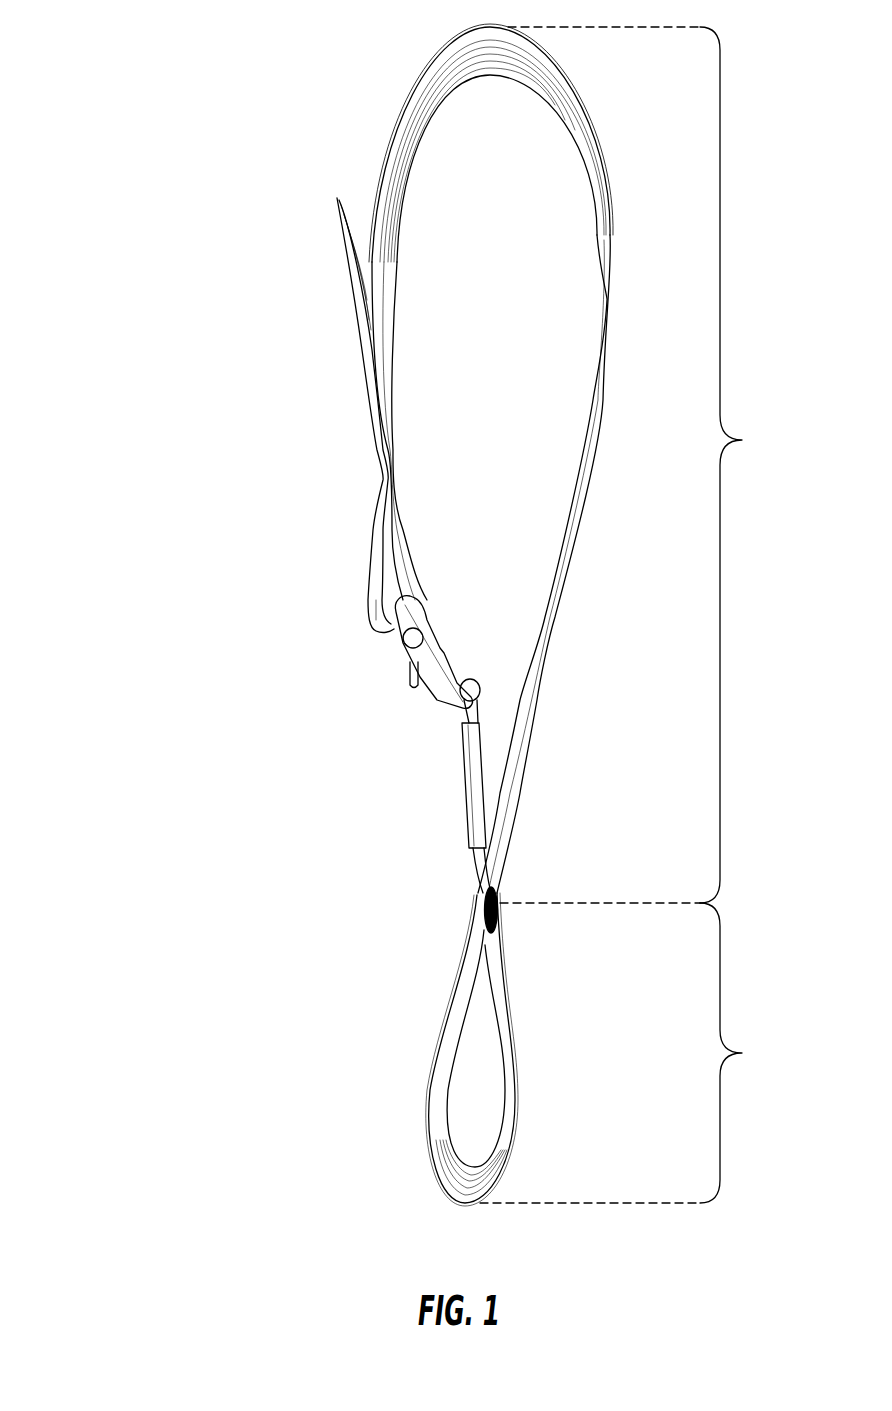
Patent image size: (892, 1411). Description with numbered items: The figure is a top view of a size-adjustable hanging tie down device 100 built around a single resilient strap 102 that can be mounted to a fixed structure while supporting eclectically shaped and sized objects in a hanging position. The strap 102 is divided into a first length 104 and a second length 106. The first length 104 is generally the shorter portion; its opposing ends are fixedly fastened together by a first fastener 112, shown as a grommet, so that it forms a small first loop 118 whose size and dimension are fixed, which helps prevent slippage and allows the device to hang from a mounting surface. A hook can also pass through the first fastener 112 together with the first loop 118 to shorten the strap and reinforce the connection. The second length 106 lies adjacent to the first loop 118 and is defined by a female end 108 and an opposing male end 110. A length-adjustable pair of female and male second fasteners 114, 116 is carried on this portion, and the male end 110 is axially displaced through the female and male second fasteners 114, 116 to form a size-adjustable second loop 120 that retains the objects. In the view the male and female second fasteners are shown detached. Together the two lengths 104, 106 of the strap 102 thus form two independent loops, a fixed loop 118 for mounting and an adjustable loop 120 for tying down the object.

The size-adjustable hanging tie down device 100 is at (176, 54).
The strap 102 is at (434, 26).
The first length 104 is at (402, 142).
The second length 106 is at (428, 1140).
The female end 108 is at (480, 689).
The male end 110 is at (337, 198).
The first fastener 112 is at (498, 906).
The female second fastener 114 is at (447, 696).
The male second fastener 116 is at (394, 628).
The first loop 118 is at (635, 1053).
The second loop 120 is at (645, 465).